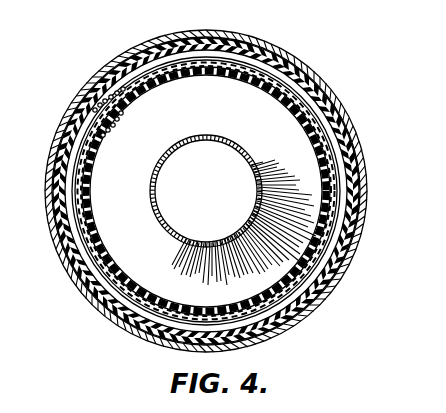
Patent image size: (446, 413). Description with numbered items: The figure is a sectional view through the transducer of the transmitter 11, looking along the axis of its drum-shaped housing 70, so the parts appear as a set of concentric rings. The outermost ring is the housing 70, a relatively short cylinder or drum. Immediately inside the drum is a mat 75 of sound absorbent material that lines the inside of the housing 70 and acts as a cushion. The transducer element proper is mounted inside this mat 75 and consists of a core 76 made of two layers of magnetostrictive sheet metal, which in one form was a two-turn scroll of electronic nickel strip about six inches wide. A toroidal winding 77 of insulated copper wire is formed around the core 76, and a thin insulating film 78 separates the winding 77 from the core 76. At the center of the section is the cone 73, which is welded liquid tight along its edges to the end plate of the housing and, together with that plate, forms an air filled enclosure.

The housing 70 is at (326, 83).
The mat of sound absorbent material 75 is at (347, 128).
The insulating film 78 is at (90, 157).
The core of magnetostrictive sheet metal 76 is at (80, 167).
The toroidal winding 77 is at (121, 112).
The cone 73 is at (158, 153).
The transmitter 11 is at (222, 200).